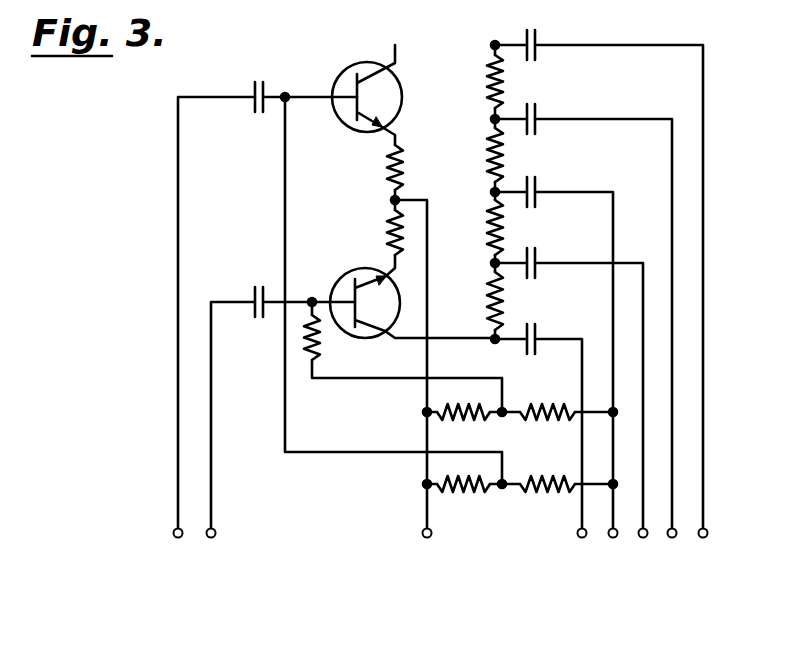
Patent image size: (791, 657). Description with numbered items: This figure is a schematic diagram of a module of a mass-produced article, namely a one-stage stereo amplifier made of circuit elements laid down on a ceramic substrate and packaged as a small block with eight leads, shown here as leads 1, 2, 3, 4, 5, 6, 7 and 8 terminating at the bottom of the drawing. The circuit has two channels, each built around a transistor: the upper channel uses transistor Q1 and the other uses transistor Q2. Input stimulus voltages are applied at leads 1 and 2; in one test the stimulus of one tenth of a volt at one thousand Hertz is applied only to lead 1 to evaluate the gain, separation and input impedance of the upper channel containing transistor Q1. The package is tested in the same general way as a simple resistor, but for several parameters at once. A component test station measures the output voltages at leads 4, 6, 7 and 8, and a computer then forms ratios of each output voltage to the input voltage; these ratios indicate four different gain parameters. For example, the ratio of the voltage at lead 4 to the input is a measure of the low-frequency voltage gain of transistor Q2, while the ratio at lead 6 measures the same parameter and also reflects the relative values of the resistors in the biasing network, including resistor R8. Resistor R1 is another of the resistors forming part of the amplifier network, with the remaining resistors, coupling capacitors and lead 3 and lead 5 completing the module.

The lead 1 is at (211, 333).
The lead 2 is at (227, 435).
The lead 3 is at (414, 384).
The lead 4 is at (561, 454).
The lead 5 is at (577, 380).
The lead 6 is at (592, 416).
The lead 7 is at (606, 344).
The lead 8 is at (622, 307).
The transistor Q1 is at (360, 66).
The transistor Q2 is at (360, 272).
The resistor R1 is at (489, 218).
The resistor R8 is at (489, 292).